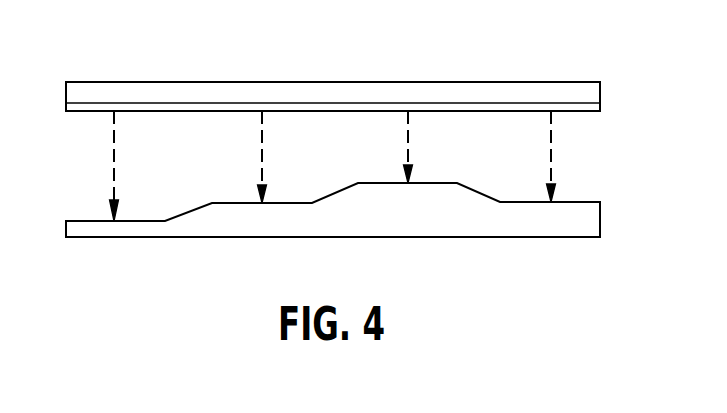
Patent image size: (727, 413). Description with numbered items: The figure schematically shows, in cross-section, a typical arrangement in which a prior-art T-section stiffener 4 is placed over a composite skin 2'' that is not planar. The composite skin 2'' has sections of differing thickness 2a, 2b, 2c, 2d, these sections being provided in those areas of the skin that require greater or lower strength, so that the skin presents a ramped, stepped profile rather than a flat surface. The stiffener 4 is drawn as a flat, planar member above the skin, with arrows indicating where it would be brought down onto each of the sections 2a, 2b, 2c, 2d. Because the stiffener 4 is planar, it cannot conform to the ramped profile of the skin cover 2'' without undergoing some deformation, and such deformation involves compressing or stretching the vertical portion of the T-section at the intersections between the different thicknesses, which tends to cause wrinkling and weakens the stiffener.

The stiffener 4 is at (323, 82).
The composite skin 2'' is at (333, 227).
The section of differing thickness 2a is at (137, 220).
The section of differing thickness 2b is at (290, 202).
The section of differing thickness 2c is at (438, 182).
The section of differing thickness 2d is at (528, 201).